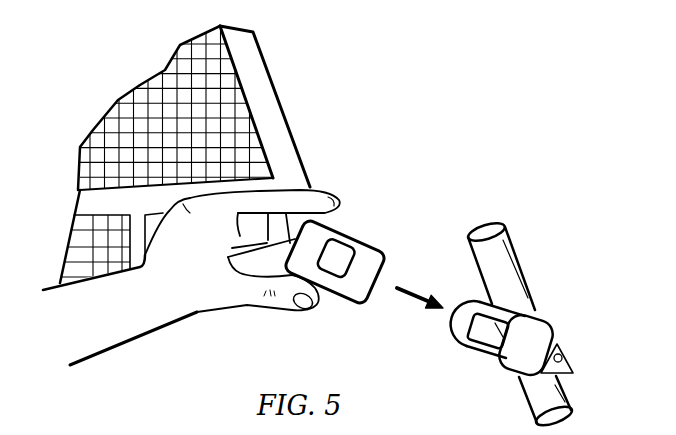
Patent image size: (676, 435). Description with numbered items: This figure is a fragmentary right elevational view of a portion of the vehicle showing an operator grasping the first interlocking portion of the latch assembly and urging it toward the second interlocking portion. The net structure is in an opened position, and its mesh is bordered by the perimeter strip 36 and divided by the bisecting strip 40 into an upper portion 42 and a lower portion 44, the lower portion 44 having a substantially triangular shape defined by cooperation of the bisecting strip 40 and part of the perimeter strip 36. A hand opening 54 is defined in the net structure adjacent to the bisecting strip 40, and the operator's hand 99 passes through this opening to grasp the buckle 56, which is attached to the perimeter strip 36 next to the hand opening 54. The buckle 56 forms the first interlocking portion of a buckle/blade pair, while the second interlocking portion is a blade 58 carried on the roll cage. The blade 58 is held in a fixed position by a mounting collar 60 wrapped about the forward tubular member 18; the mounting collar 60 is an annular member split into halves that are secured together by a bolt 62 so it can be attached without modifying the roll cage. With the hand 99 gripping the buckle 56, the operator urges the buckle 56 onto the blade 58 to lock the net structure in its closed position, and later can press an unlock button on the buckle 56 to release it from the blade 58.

The forward tubular member 18 is at (523, 263).
The perimeter strip 36 is at (284, 110).
The bisecting strip 40 is at (90, 201).
The upper portion 42 is at (144, 86).
The lower portion 44 is at (73, 257).
The hand opening 54 is at (147, 230).
The buckle 56 is at (360, 230).
The blade 58 is at (480, 360).
The mounting collar 60 is at (574, 370).
The bolt 62 is at (561, 345).
The operator's hand 99 is at (228, 313).